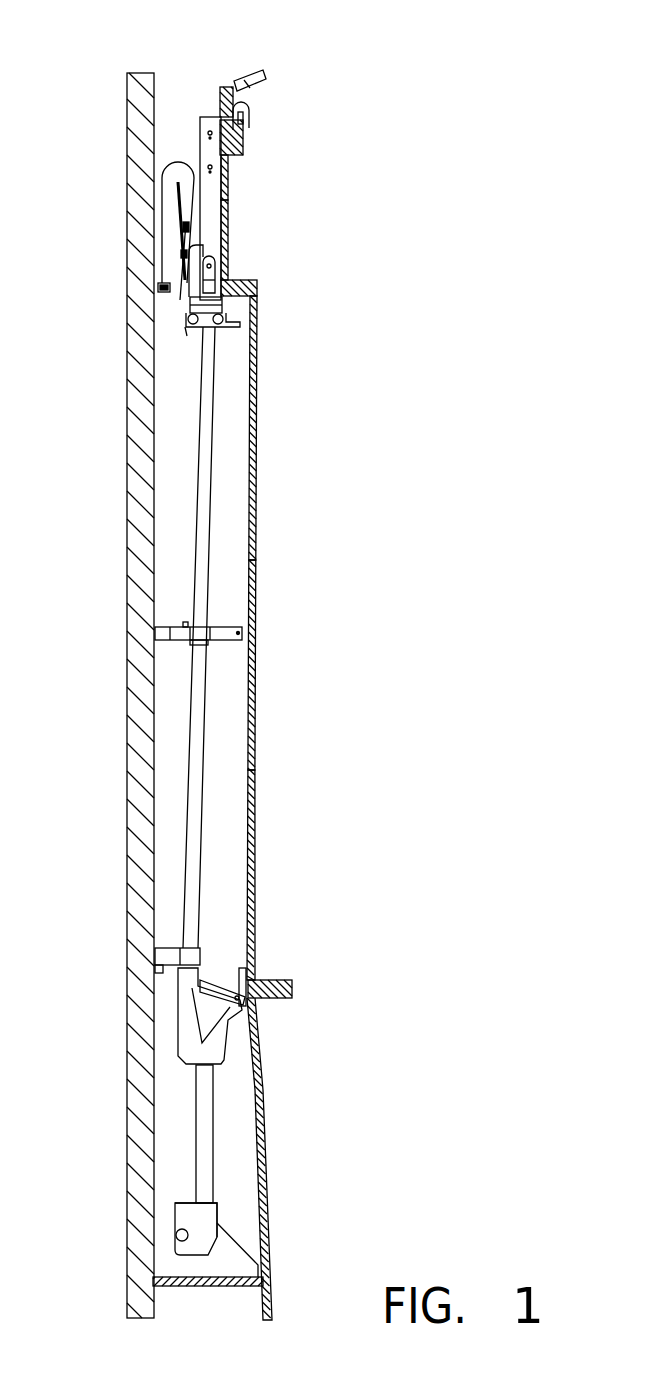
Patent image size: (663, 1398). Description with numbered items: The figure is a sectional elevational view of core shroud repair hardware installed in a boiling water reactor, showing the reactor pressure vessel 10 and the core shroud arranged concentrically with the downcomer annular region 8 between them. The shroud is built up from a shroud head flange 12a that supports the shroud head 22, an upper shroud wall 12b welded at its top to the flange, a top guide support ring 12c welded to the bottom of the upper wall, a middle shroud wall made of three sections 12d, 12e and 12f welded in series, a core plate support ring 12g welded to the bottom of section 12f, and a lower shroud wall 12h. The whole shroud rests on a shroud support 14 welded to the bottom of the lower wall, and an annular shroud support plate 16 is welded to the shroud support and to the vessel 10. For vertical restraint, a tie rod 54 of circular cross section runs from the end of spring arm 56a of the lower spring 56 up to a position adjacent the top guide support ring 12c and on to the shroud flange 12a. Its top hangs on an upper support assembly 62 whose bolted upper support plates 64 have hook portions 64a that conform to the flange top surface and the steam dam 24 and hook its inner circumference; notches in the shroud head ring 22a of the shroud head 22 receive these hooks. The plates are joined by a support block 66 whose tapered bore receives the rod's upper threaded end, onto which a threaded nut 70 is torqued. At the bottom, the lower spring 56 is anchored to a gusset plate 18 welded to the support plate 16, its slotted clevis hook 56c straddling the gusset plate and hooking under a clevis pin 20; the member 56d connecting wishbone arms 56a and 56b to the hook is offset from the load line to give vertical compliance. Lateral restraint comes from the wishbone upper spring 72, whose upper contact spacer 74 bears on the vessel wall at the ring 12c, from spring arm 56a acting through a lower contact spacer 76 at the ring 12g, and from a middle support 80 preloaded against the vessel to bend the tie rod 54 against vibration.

The annular region 8 is at (166, 468).
The reactor pressure vessel 10 is at (127, 540).
The shroud head flange 12a is at (245, 142).
The upper shroud wall 12b is at (230, 223).
The top guide support ring 12c is at (257, 283).
The middle shroud wall section 12d is at (258, 445).
The middle shroud wall section 12e is at (257, 710).
The middle shroud wall section 12f is at (257, 808).
The core plate support ring 12g is at (272, 1000).
The lower shroud wall 12h is at (266, 1157).
The shroud support 14 is at (270, 1262).
The shroud support plate 16 is at (188, 1287).
The gusset plate 18 is at (172, 1222).
The clevis pin 20 is at (177, 1238).
The shroud head 22 is at (240, 66).
The shroud head ring 22a is at (219, 98).
The steam dam 24 is at (244, 120).
The tie rod 54 is at (185, 800).
The lower spring 56 is at (196, 1117).
The spring arm 56a is at (178, 1030).
The spring arm 56b is at (227, 1018).
The clevis hook 56c is at (207, 1212).
The connecting member 56d is at (205, 1108).
The upper support assembly 62 is at (215, 188).
The upper support plate 64 is at (199, 140).
The hook portion 64a is at (252, 110).
The support block 66 is at (237, 330).
The threaded nut 70 is at (224, 304).
The upper spring 72 is at (166, 176).
The upper contact spacer 74 is at (158, 287).
The lower contact spacer 76 is at (155, 957).
The middle support 80 is at (228, 627).